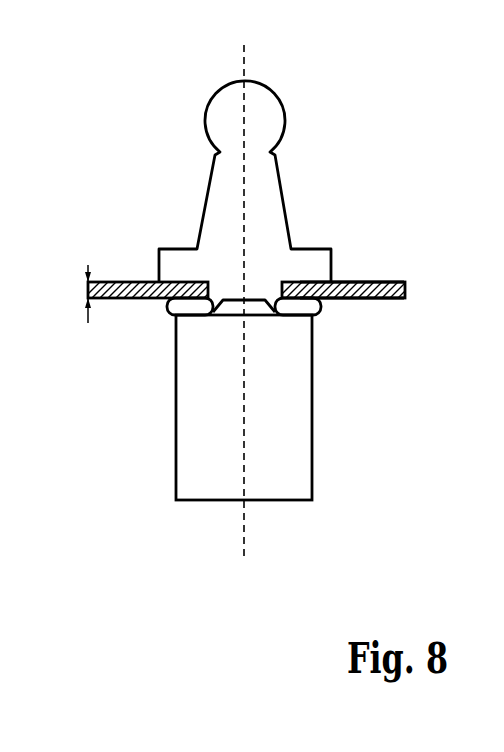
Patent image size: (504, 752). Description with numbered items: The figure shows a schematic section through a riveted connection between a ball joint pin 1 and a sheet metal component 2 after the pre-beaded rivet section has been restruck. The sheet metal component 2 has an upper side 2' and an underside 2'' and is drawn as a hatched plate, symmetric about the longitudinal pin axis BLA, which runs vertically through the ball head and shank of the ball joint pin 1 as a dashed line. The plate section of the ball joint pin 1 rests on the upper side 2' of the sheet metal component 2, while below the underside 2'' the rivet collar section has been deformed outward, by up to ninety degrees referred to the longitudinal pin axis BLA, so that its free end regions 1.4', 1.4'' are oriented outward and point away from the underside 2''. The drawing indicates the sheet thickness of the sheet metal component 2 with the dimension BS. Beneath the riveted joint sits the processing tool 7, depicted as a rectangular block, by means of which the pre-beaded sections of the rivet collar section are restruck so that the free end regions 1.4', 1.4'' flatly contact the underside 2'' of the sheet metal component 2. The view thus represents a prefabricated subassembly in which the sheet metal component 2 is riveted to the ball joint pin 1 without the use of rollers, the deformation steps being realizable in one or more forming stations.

The ball joint pin 1 is at (280, 88).
The sheet metal component 2 is at (275, 242).
The upper side of the sheet metal component 2' is at (352, 243).
The underside of the sheet metal component 2'' is at (360, 335).
The free end region of the rivet collar section 1.4' is at (130, 349).
The free end region of the rivet collar section 1.4'' is at (378, 368).
The processing tool 7 is at (300, 428).
The plate thickness BS is at (62, 294).
The longitudinal pin axis BLA is at (245, 323).